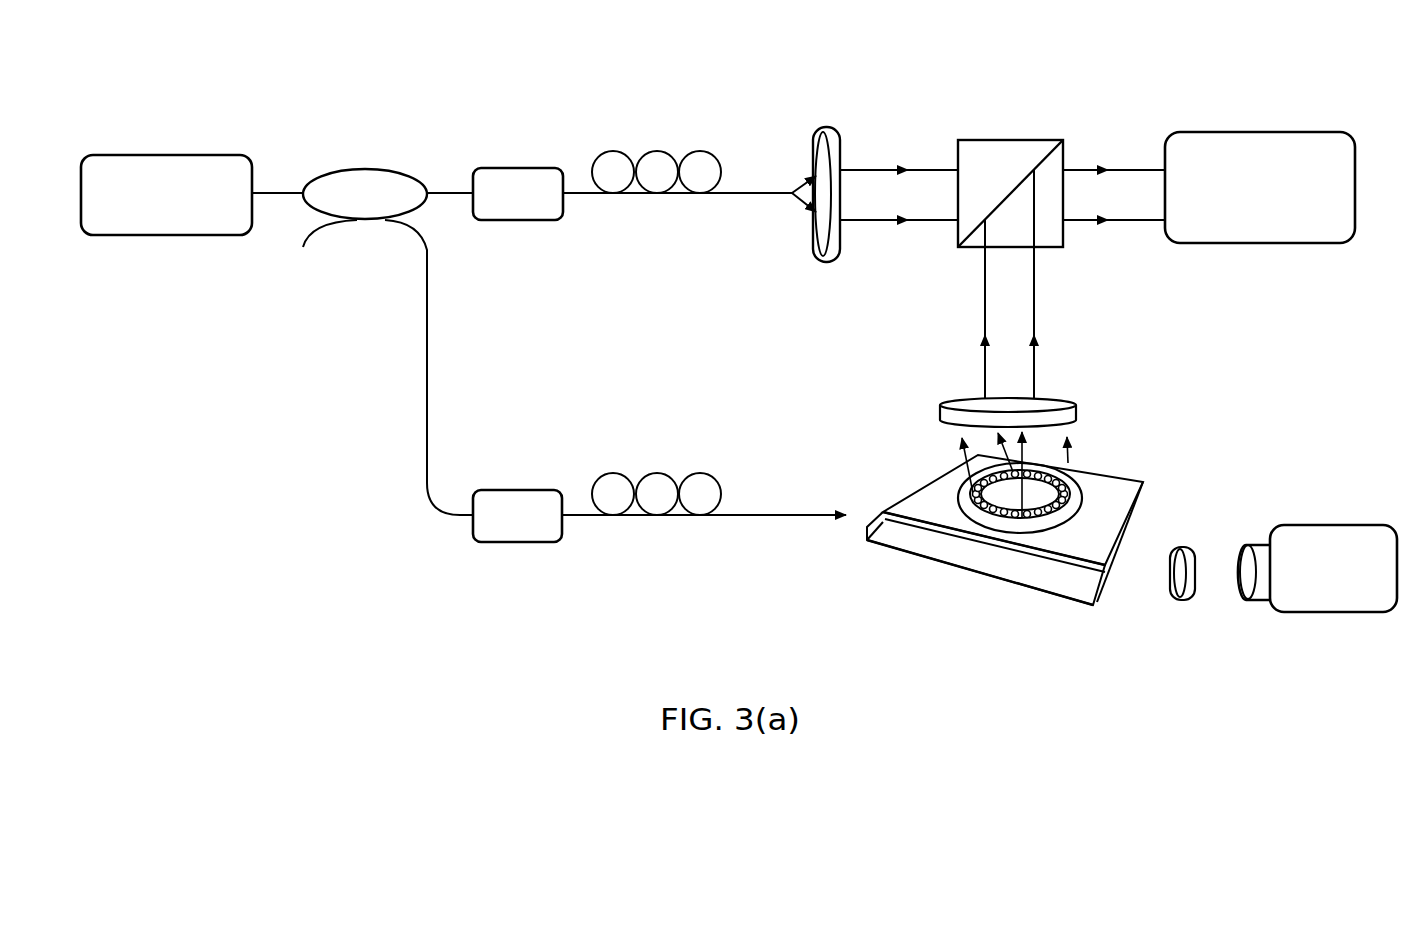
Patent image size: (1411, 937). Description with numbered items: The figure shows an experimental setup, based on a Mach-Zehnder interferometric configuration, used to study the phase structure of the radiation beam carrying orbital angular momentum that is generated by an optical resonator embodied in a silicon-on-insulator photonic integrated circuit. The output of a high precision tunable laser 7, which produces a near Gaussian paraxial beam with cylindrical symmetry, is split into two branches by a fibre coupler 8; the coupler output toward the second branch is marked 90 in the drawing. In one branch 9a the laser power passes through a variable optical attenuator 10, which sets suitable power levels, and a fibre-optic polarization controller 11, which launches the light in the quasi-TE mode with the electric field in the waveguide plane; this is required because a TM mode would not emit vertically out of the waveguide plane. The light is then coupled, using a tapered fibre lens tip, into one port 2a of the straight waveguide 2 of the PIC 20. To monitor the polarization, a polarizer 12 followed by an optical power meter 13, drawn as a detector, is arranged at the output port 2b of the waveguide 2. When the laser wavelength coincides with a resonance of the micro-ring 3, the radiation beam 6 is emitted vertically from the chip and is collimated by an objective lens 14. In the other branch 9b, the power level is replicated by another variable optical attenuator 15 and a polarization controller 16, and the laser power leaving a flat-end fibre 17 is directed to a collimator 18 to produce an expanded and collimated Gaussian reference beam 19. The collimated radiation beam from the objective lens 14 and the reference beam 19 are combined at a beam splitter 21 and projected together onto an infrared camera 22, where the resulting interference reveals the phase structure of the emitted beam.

The tunable laser 7 is at (150, 167).
The fibre coupler 8 is at (368, 203).
The branch 9a is at (426, 430).
The other branch 9b is at (455, 190).
The coupler output port 90 is at (443, 219).
The variable optical attenuator 10 is at (500, 543).
The fibre-optic polarization controller 11 is at (660, 437).
The polarizer 12 is at (1186, 630).
The optical power meter 13 is at (1312, 606).
The objective lens 14 is at (1163, 398).
The variable optical attenuator 15 is at (505, 168).
The polarization controller 16 is at (647, 125).
The flat-end fibre 17 is at (757, 242).
The collimator 18 is at (828, 83).
The Gaussian reference beam 19 is at (868, 222).
The PIC 20 is at (977, 614).
The beam splitter 21 is at (1020, 85).
The infrared camera 22 is at (1250, 142).
The straight waveguide 2 is at (1073, 560).
The port 2a is at (883, 512).
The output port 2b is at (1103, 574).
The micro-ring 3 is at (1072, 522).
The radiation beam 6 is at (1068, 458).